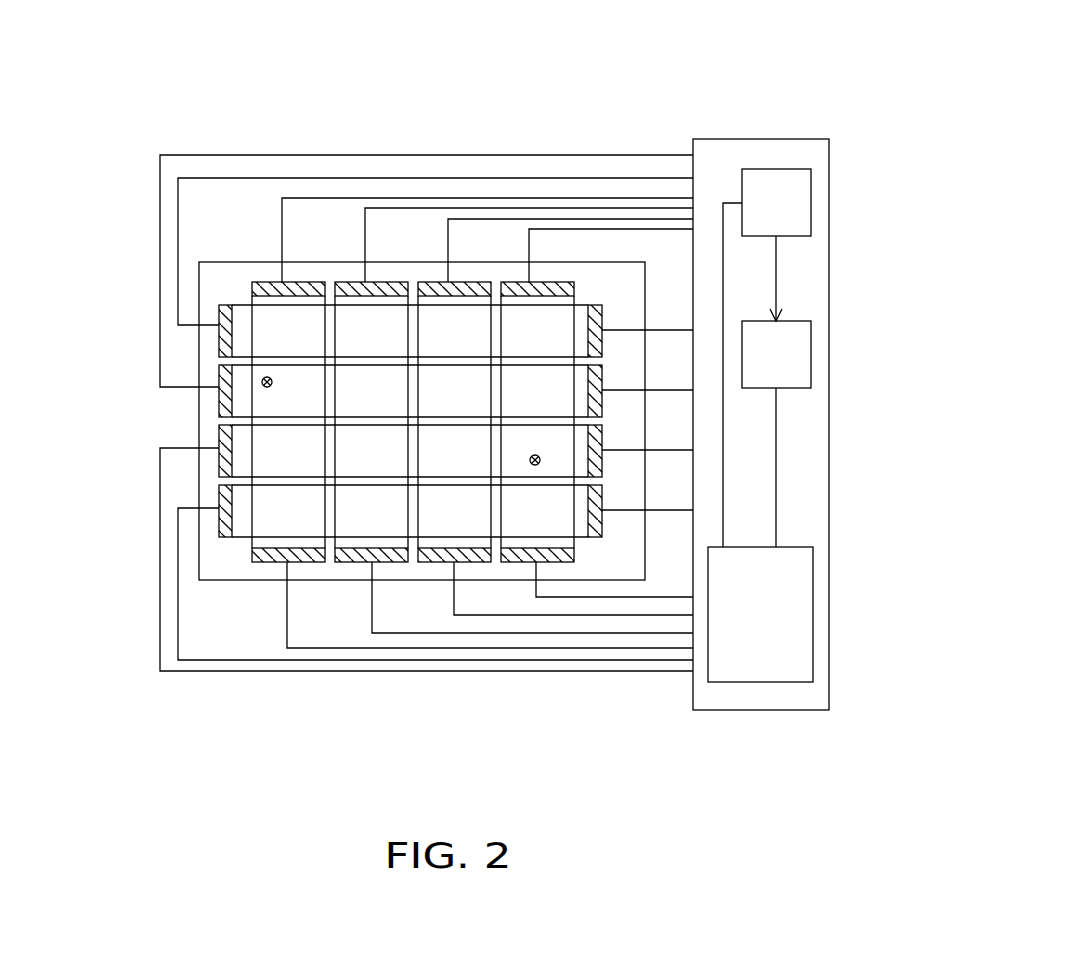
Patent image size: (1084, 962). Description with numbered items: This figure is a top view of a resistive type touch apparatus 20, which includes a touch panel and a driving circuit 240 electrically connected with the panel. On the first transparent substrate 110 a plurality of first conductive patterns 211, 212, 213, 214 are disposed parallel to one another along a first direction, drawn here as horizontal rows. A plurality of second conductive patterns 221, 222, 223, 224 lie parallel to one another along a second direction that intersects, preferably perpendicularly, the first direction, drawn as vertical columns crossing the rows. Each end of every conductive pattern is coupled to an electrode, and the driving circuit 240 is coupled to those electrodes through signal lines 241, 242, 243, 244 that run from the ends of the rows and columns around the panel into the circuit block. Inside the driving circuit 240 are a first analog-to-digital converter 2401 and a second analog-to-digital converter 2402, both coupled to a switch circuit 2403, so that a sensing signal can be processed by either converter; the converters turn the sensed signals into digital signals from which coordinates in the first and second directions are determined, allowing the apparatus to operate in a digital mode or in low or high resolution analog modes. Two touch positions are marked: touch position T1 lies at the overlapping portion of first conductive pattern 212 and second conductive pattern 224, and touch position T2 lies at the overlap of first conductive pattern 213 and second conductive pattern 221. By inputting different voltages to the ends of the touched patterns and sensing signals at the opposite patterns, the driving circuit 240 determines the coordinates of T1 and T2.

The resistive type touch apparatus 20 is at (814, 31).
The first transparent substrate 110 is at (215, 279).
The first conductive pattern 211 is at (240, 345).
The first conductive pattern 212 is at (240, 409).
The first conductive pattern 213 is at (240, 436).
The first conductive pattern 214 is at (240, 497).
The second conductive pattern 221 is at (517, 562).
The second conductive pattern 222 is at (428, 562).
The second conductive pattern 223 is at (350, 562).
The second conductive pattern 224 is at (265, 562).
The touch position T1 is at (267, 376).
The touch position T2 is at (541, 461).
The driving circuit 240 is at (789, 390).
The first analog-to-digital converter ADC1 2401 is at (811, 355).
The second analog-to-digital converter ADC2 2402 is at (811, 203).
The switch circuit 2403 is at (813, 613).
The signal line 241 is at (668, 512).
The signal line 242 is at (186, 155).
The signal line 243 is at (587, 615).
The signal line 244 is at (312, 198).